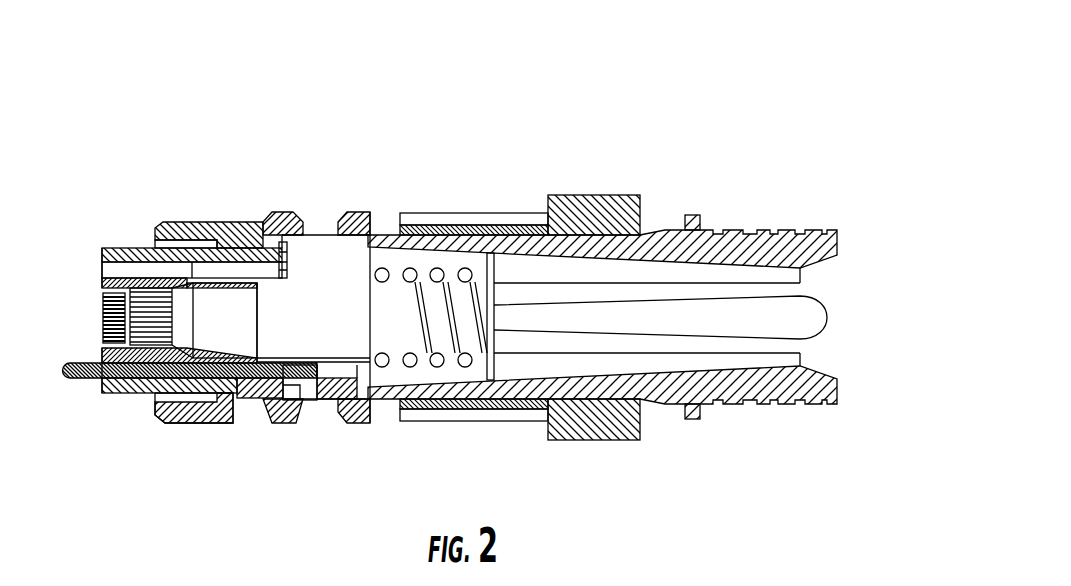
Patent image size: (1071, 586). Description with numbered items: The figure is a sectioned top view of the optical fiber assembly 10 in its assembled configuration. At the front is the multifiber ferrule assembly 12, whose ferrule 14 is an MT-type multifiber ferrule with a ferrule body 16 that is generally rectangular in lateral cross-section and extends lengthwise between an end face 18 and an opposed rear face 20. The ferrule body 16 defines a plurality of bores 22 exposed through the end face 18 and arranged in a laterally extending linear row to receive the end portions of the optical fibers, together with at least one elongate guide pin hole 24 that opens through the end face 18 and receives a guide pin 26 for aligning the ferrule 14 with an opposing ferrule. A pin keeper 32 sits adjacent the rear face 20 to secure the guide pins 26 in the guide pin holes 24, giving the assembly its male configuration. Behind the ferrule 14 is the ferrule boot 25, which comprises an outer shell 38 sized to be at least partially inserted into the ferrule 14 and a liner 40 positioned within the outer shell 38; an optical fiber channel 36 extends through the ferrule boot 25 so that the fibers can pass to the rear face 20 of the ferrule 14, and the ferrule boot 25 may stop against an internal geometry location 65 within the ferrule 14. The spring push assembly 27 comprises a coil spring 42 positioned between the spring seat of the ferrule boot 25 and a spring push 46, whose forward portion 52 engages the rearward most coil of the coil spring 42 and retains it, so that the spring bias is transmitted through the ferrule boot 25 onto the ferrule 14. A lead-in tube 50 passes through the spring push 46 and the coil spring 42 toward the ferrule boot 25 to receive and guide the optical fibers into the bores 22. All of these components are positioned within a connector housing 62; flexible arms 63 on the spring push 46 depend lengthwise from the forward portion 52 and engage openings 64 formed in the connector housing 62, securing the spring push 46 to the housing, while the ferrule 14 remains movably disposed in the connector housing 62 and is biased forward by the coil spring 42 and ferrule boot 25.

The optical fiber assembly 10 is at (688, 95).
The multifiber ferrule assembly 12 is at (330, 258).
The ferrule 14 is at (123, 247).
The ferrule body 16 is at (107, 268).
The end face 18 is at (103, 347).
The rear face 20 is at (288, 392).
The bores 22 is at (100, 325).
The guide pin hole 24 is at (145, 268).
The ferrule boot 25 is at (348, 362).
The guide pin 26 is at (80, 380).
The spring push assembly 27 is at (668, 222).
The pin keeper 32 is at (258, 247).
The optical fiber channel 36 is at (341, 312).
The outer shell 38 is at (333, 360).
The liner 40 is at (307, 230).
The coil spring 42 is at (450, 343).
The spring push 46 is at (653, 410).
The lead-in tube 50 is at (822, 295).
The forward portion 52 is at (567, 253).
The connector housing 62 is at (195, 425).
The flexible arms 63 is at (484, 213).
The openings 64 is at (399, 213).
The internal geometry location 65 is at (247, 362).